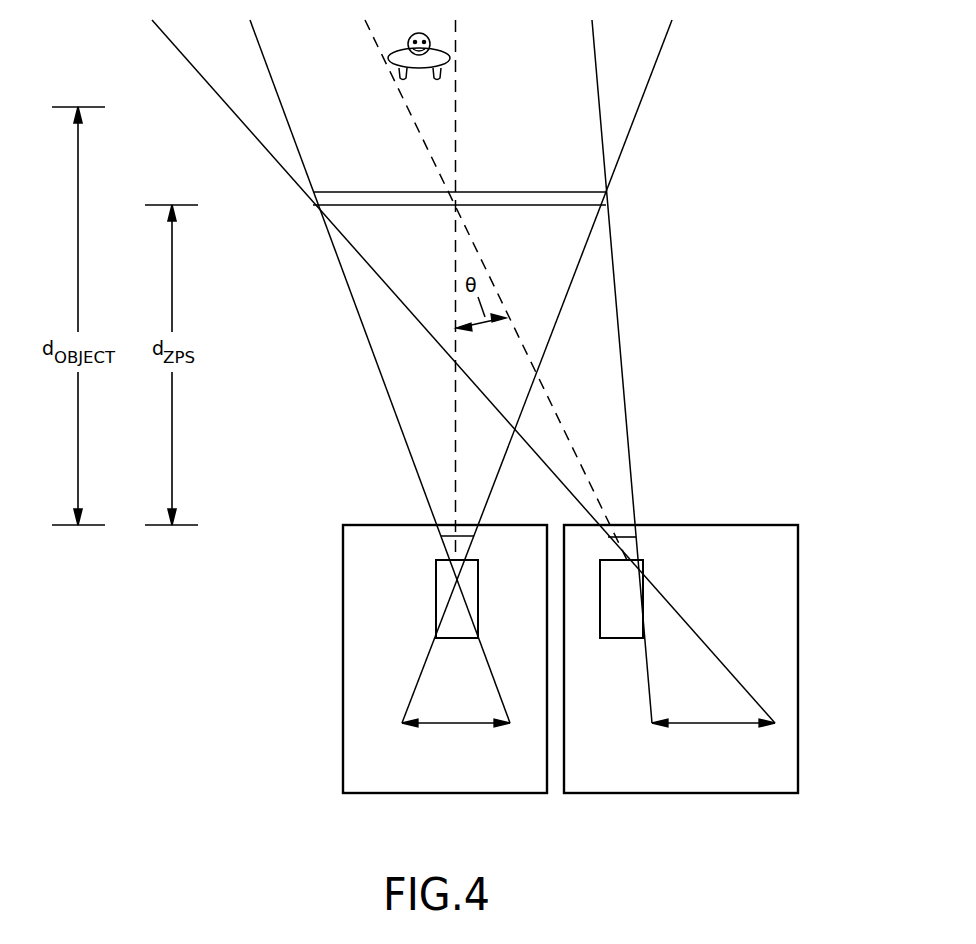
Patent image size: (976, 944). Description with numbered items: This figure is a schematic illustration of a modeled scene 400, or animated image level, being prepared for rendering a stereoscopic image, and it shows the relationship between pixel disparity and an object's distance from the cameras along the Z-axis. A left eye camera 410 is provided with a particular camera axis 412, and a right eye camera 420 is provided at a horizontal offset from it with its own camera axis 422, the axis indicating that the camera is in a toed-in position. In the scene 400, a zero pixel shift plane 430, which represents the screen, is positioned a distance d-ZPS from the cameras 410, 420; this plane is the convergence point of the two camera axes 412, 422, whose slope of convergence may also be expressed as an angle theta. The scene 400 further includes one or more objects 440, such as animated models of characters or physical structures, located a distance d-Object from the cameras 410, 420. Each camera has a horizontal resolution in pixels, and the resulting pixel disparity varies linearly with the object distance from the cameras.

The modeled scene 400 is at (300, 291).
The left eye camera 410 is at (343, 543).
The camera axis 412 is at (455, 436).
The right eye camera 420 is at (755, 525).
The camera axis 422 is at (590, 492).
The zero pixel shift (ZPS) plane 430 is at (606, 198).
The object 440 is at (450, 58).